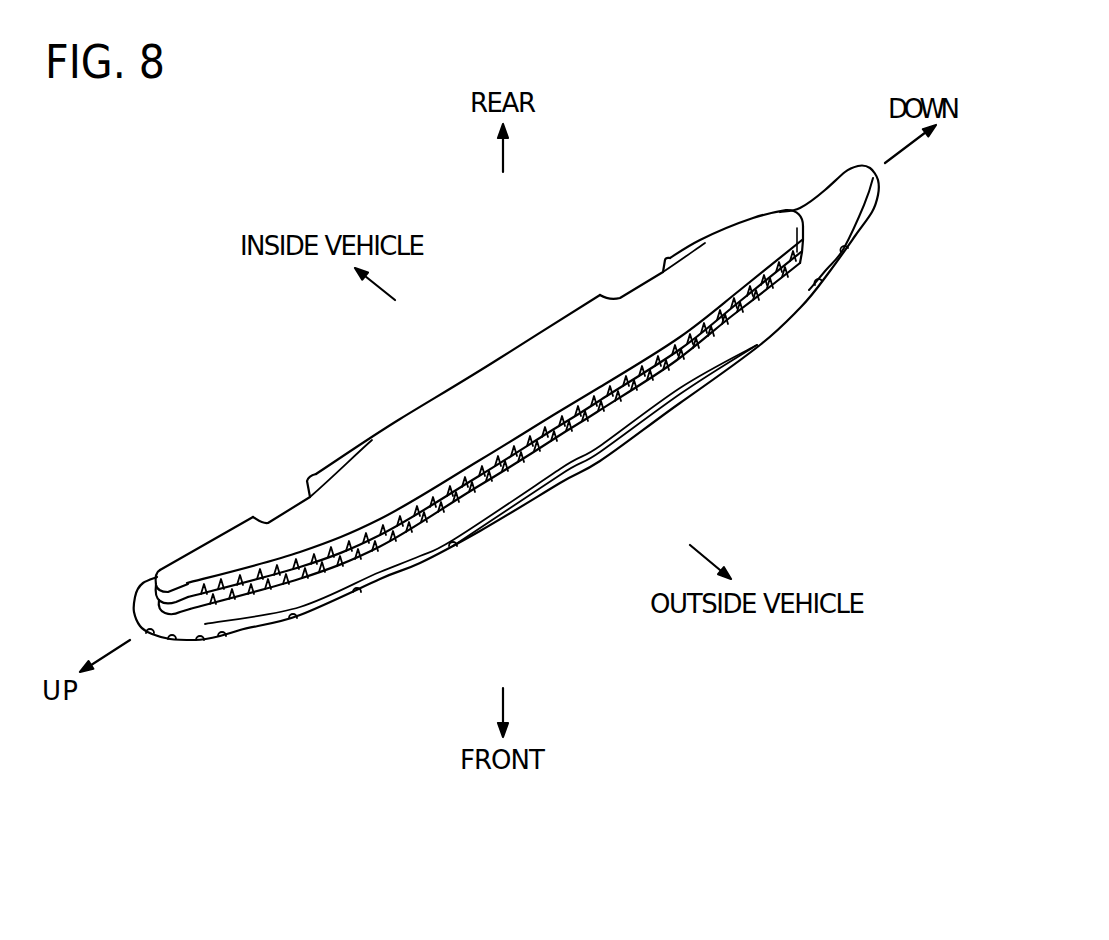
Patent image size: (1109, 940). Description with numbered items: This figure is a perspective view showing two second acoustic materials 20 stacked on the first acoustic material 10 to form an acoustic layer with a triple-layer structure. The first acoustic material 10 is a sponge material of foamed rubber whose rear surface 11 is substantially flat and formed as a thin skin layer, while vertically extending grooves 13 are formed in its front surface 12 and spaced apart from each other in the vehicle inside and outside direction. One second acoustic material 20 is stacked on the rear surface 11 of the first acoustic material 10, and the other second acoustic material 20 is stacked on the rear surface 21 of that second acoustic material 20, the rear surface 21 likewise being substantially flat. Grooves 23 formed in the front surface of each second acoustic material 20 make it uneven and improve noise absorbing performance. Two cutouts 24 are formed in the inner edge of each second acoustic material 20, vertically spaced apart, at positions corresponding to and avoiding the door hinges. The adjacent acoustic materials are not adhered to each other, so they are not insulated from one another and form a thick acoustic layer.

The first acoustic material 10 is at (839, 180).
The rear surface 11 is at (837, 222).
The front surface 12 is at (784, 327).
The grooves 13 is at (357, 594).
The second acoustic material 20 is at (497, 373).
The rear surface 21 is at (571, 330).
The grooves 23 is at (218, 604).
The cutouts 24 is at (630, 292).